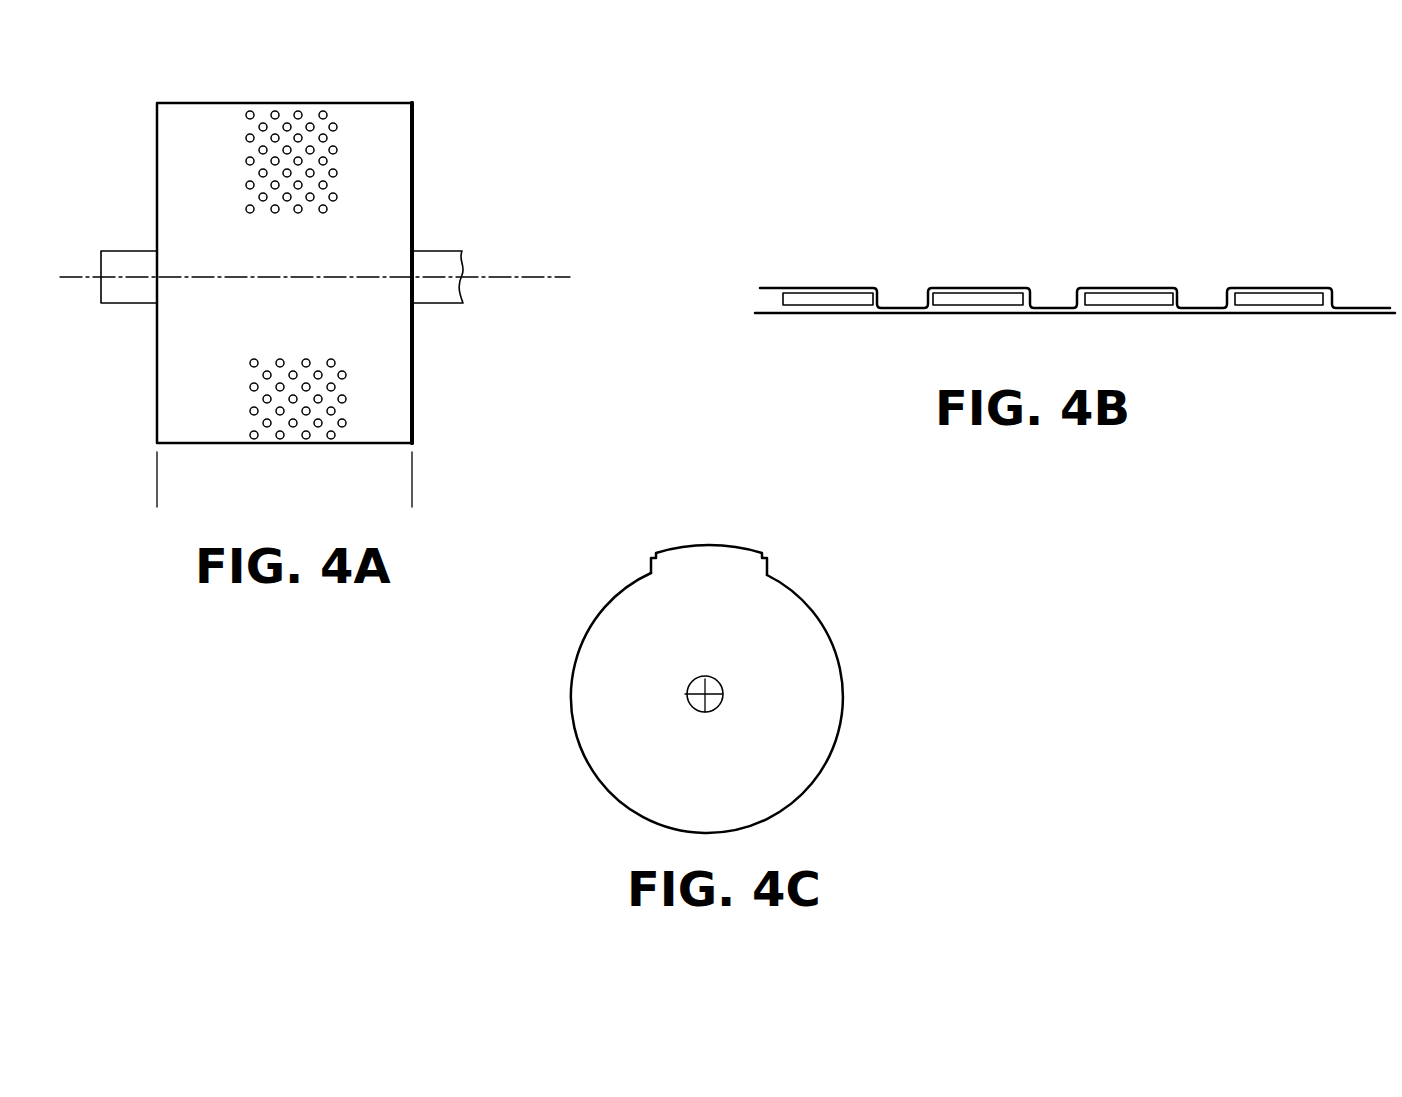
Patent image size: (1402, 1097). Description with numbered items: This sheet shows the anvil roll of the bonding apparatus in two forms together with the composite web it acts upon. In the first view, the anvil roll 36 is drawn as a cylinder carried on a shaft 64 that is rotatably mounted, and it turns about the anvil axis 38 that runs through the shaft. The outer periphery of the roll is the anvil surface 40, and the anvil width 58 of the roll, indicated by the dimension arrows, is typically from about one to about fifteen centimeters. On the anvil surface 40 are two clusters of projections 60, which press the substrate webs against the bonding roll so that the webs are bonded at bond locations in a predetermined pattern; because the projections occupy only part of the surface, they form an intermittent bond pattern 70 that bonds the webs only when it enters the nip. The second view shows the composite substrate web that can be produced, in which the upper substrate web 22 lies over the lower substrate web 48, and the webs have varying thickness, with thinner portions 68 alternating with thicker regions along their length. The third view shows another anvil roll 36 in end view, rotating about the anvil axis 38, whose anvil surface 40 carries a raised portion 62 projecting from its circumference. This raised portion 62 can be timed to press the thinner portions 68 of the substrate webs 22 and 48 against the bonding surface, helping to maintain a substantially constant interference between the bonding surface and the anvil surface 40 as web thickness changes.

In FIG. 4B, the substrate web 22 is at (770, 288).
In FIG. 4A, the anvil roll 36 is at (395, 400).
In FIG. 4C, the anvil roll 36 is at (806, 660).
In FIG. 4A, the anvil axis 38 is at (530, 277).
In FIG. 4C, the anvil axis 38 is at (710, 701).
In FIG. 4A, the anvil surface 40 is at (395, 169).
In FIG. 4B, the substrate web 48 is at (765, 314).
In FIG. 4A, the anvil width 58 is at (375, 480).
In FIG. 4A, the projections 60 is at (335, 122).
In FIG. 4C, the raised portion 62 is at (733, 548).
In FIG. 4A, the shaft 64 is at (437, 250).
In FIG. 4B, the thinner portions 68 is at (919, 278).
In FIG. 4A, the intermittent bond pattern 70 is at (196, 169).